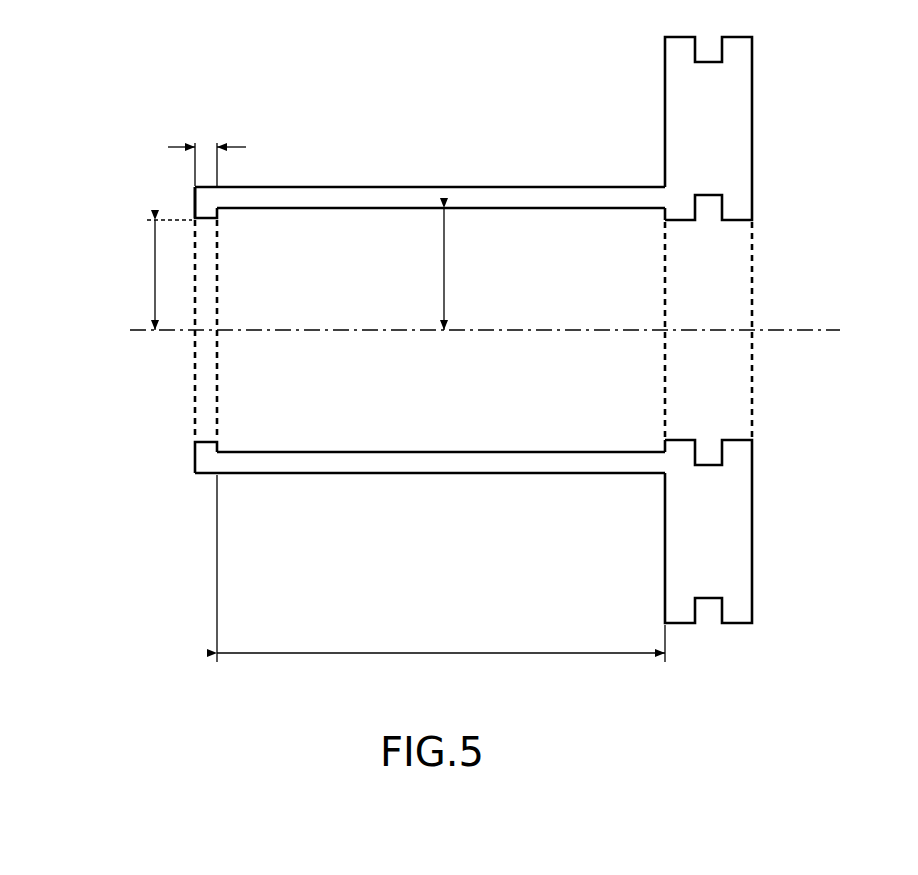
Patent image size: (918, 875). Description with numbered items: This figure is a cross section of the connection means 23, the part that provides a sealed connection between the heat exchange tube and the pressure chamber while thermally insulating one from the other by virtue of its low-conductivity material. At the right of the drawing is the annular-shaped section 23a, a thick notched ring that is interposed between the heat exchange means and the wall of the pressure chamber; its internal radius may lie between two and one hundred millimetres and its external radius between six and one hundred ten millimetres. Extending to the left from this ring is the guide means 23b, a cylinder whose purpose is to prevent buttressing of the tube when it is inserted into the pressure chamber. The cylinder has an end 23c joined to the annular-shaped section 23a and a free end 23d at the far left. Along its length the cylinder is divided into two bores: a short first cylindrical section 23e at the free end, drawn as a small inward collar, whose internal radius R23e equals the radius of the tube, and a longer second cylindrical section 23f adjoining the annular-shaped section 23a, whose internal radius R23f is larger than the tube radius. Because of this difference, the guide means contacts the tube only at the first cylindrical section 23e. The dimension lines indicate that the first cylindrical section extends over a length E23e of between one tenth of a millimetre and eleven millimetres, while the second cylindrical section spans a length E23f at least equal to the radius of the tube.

The connection means 23 is at (256, 77).
The annular-shaped section 23a is at (668, 88).
The guide means 23b is at (512, 198).
The end 23c is at (664, 210).
The free end 23d is at (193, 203).
The first cylindrical section 23e is at (205, 462).
The second cylindrical section 23f is at (636, 462).
The length of the first cylindrical section E23e is at (207, 151).
The internal radius of the first cylindrical section R23e is at (135, 275).
The internal radius of the second cylindrical section R23f is at (475, 269).
The length of the second cylindrical section E23f is at (441, 568).